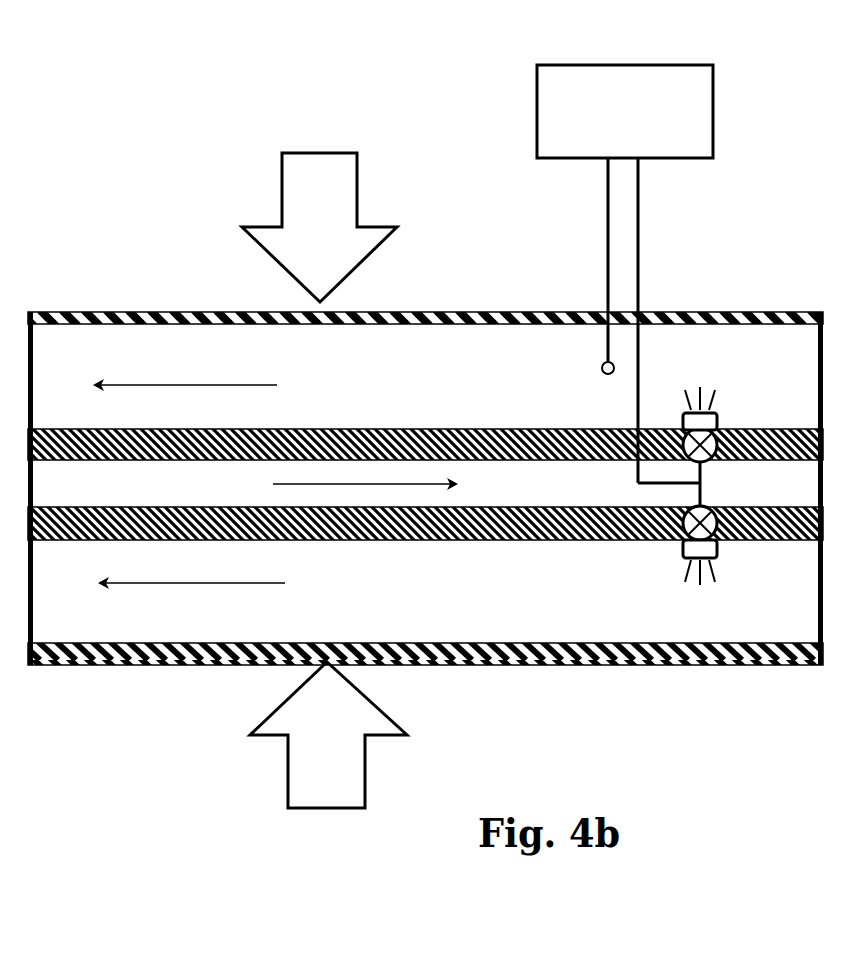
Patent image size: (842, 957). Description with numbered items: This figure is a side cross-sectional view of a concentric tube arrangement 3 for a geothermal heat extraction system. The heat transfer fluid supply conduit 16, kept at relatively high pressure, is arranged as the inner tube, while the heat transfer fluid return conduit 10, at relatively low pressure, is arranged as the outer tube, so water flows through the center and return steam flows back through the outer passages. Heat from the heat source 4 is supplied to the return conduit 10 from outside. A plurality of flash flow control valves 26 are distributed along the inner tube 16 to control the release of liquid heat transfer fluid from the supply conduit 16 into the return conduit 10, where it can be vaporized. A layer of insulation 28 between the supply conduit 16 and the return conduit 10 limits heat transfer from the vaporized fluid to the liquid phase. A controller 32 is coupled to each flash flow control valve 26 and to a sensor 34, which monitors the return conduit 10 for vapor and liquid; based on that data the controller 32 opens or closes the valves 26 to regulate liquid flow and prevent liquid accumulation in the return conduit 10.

The concentric tube arrangement 3 is at (430, 312).
The heat source 4 is at (282, 197).
The heat transfer fluid return conduit 10 is at (222, 365).
The heat transfer fluid supply conduit 16 is at (553, 502).
The flash flow control valve 26 is at (717, 415).
The layer of insulation 28 is at (660, 540).
The controller 32 is at (663, 158).
The sensor 34 is at (602, 368).